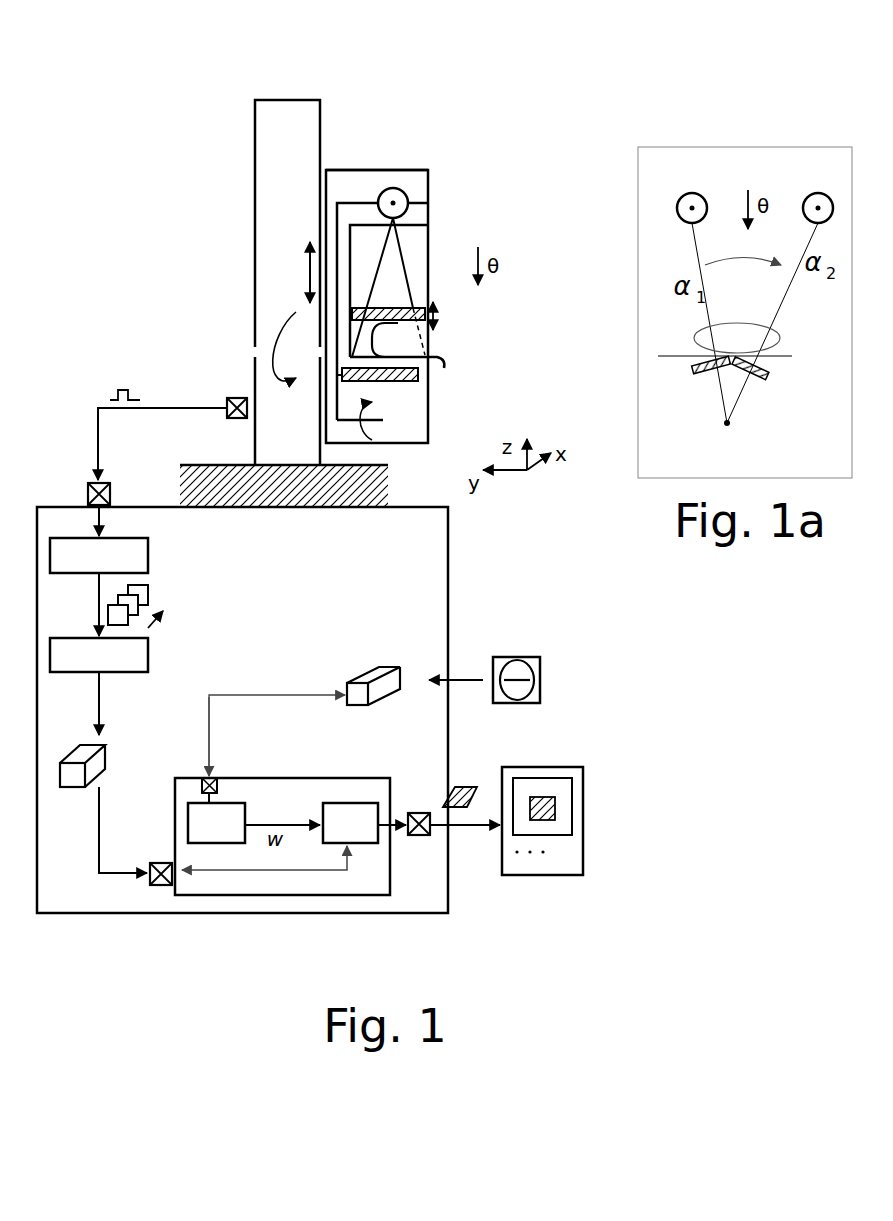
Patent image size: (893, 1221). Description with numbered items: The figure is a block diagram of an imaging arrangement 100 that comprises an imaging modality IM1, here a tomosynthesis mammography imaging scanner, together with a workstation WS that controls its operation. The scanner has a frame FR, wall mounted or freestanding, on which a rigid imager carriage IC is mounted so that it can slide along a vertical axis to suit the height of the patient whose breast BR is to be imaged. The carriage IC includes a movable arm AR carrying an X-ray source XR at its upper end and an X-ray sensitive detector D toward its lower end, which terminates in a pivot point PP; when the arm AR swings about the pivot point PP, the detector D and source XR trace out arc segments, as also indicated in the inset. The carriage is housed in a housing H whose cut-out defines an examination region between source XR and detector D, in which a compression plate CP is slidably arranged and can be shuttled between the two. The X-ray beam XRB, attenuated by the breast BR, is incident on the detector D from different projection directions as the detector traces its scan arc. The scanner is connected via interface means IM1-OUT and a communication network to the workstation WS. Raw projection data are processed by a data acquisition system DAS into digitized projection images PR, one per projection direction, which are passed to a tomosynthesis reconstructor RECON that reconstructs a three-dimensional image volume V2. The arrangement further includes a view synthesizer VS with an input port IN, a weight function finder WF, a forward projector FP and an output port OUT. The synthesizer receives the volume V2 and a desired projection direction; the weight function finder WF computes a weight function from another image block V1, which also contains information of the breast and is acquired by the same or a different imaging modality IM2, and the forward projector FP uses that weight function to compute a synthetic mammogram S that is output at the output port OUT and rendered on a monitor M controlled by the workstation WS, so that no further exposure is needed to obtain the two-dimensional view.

In FIG. 1, the imaging arrangement 100 is at (182, 113).
In FIG. 1, the imaging modality IM1 is at (353, 72).
In FIG. 1, the frame FR is at (307, 140).
In FIG. 1, the housing H is at (378, 170).
In FIG. 1, the imager carriage IC is at (433, 160).
In FIG. 1, the arm AR is at (335, 227).
In FIG. 1, the X-ray source XR is at (410, 202).
In FIG. 1A, the X-ray source XR is at (795, 212).
In FIG. 1, the X-ray beam XRB is at (393, 268).
In FIG. 1, the compression plate CP is at (413, 300).
In FIG. 1, the breast BR is at (437, 357).
In FIG. 1A, the breast BR is at (780, 332).
In FIG. 1, the detector D is at (420, 378).
In FIG. 1A, the detector D is at (710, 377).
In FIG. 1, the pivot point PP is at (388, 420).
In FIG. 1A, the pivot point PP is at (733, 423).
In FIG. 1, the interface means IM1-OUT is at (217, 400).
In FIG. 1, the data acquisition system DAS is at (99, 555).
In FIG. 1, the projection images PR is at (152, 588).
In FIG. 1, the tomosynthesis reconstructor RECON is at (99, 655).
In FIG. 1, the image volume V2 is at (120, 752).
In FIG. 1, the input port IN is at (148, 888).
In FIG. 1, the view synthesizer VS is at (262, 797).
In FIG. 1, the weight function finder WF is at (216, 818).
In FIG. 1, the forward projector FP is at (350, 823).
In FIG. 1, the output port OUT is at (418, 805).
In FIG. 1, the synthetic mammogram S is at (468, 787).
In FIG. 1, the monitor M is at (583, 805).
In FIG. 1, the image block V1 is at (388, 655).
In FIG. 1, the imaging modality IM2 is at (518, 638).
In FIG. 1, the workstation WS is at (407, 915).